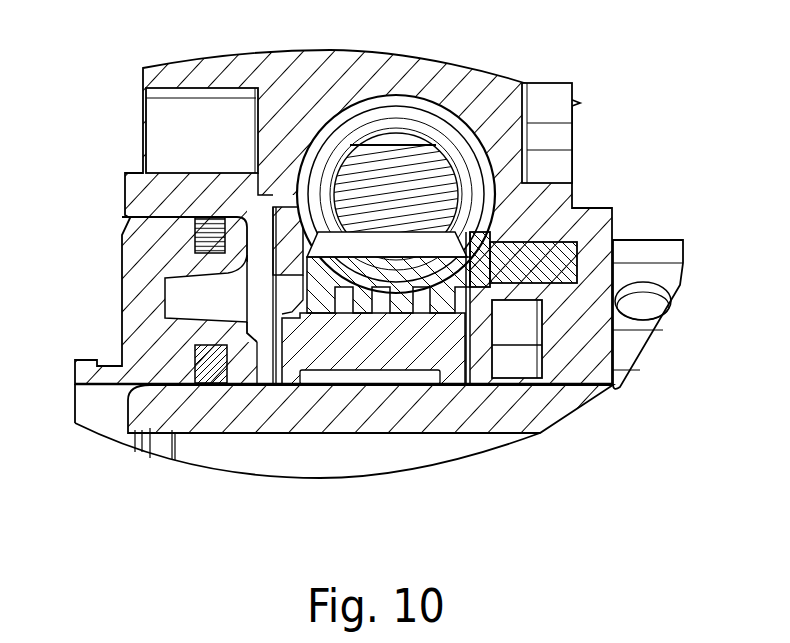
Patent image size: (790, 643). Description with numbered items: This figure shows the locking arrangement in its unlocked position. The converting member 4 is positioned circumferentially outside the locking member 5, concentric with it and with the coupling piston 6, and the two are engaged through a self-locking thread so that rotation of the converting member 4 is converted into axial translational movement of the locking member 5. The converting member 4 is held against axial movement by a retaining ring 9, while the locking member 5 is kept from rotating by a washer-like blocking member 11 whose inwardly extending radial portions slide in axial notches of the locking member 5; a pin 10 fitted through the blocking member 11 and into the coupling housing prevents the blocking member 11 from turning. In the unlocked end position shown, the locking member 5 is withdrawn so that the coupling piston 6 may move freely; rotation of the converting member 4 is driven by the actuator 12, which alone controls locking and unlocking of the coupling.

The converting member 4 is at (488, 234).
The locking member 5 is at (503, 360).
The coupling piston 6 is at (150, 292).
The retaining ring 9 is at (226, 218).
The pin 10 is at (547, 240).
The blocking member 11 is at (492, 380).
The actuator 12 is at (417, 183).